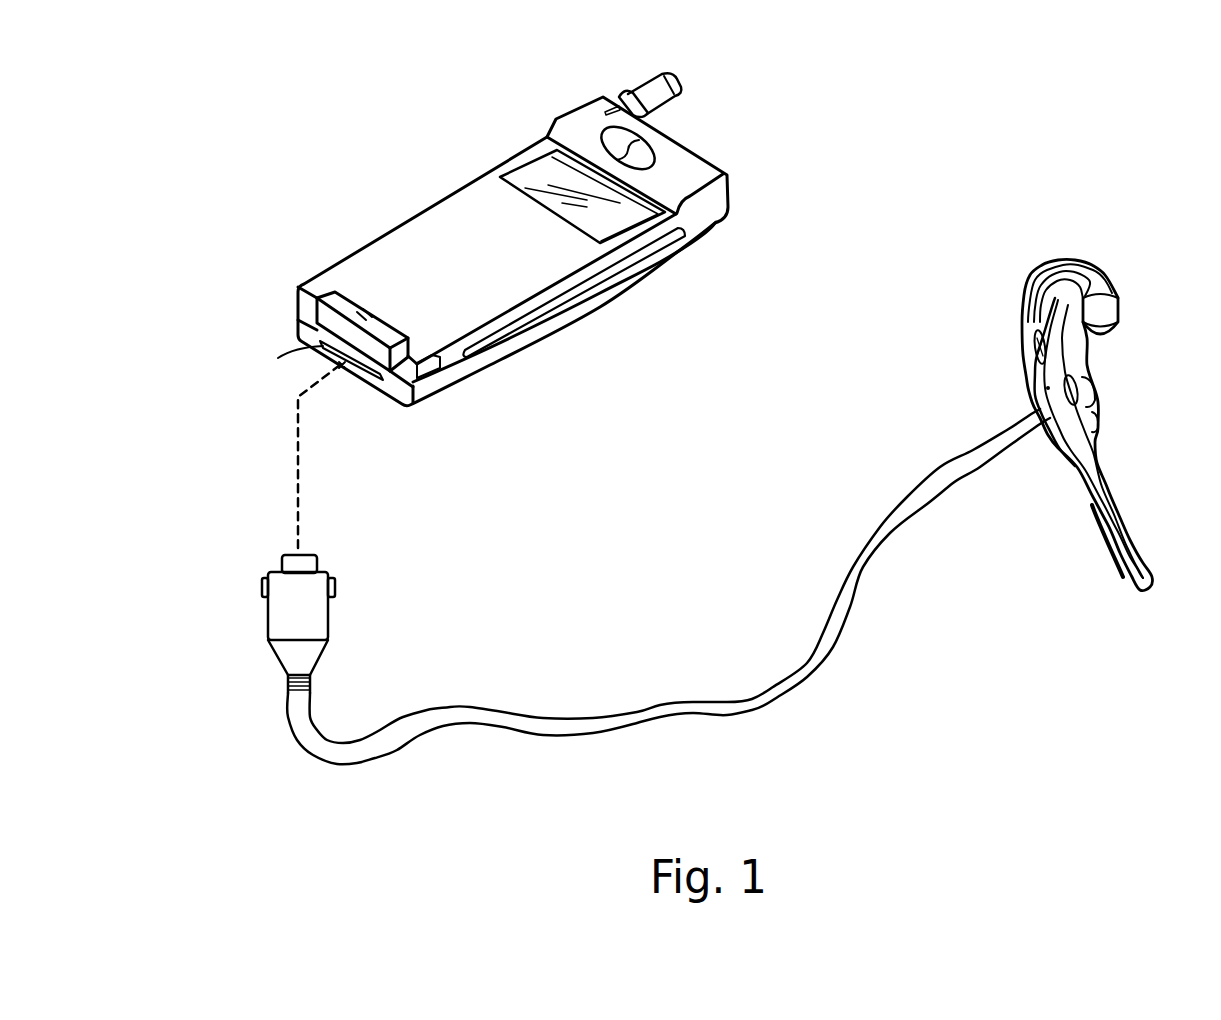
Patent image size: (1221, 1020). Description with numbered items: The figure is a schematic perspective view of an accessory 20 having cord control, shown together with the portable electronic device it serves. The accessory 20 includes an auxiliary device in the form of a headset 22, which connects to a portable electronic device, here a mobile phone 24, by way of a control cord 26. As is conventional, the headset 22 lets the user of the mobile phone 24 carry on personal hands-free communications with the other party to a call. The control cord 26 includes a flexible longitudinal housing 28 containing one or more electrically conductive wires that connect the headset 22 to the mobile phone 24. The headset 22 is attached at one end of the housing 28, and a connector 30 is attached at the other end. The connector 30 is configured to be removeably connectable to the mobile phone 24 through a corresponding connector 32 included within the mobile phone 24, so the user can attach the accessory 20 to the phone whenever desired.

The accessory 20 is at (923, 712).
The headset 22 is at (1100, 272).
The mobile phone 24 is at (503, 275).
The control cord 26 is at (535, 650).
The flexible longitudinal housing 28 is at (717, 700).
The connector 30 is at (287, 613).
The corresponding connector 32 is at (358, 397).